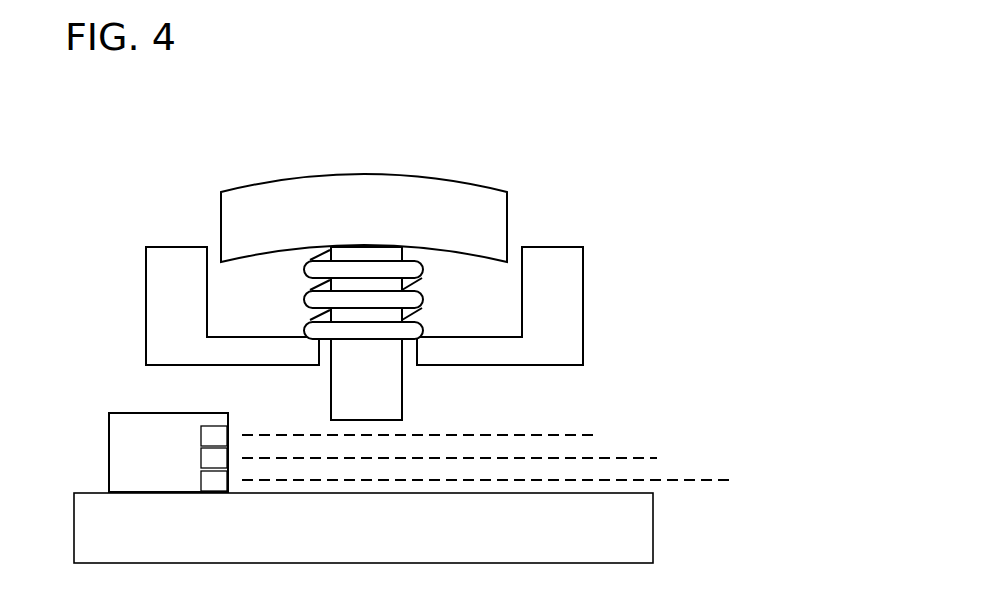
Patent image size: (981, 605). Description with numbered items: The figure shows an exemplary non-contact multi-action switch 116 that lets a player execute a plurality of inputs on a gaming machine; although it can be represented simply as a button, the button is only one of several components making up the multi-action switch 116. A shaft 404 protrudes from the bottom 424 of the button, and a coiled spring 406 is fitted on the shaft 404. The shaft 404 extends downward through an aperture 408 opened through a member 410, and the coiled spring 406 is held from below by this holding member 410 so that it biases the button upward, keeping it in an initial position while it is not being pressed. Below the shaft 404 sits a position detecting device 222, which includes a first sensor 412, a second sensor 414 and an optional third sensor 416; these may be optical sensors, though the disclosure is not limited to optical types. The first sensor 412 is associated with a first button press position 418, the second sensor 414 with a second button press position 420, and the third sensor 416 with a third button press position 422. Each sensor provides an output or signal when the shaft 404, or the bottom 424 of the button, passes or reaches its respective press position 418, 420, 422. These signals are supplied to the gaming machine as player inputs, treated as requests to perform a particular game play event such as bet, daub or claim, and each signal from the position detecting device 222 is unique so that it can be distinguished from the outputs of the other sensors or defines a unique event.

The multi-action switch 116 is at (592, 109).
The position detecting device 222 is at (109, 428).
The shaft 404 is at (402, 402).
The coiled spring 406 is at (425, 292).
The aperture 408 is at (323, 367).
The member 410 is at (146, 333).
The first sensor 412 is at (201, 437).
The second sensor 414 is at (201, 459).
The third sensor 416 is at (201, 481).
The first button press position 418 is at (533, 435).
The second button press position 420 is at (618, 458).
The third button press position 422 is at (683, 480).
The bottom of button 424 is at (367, 421).